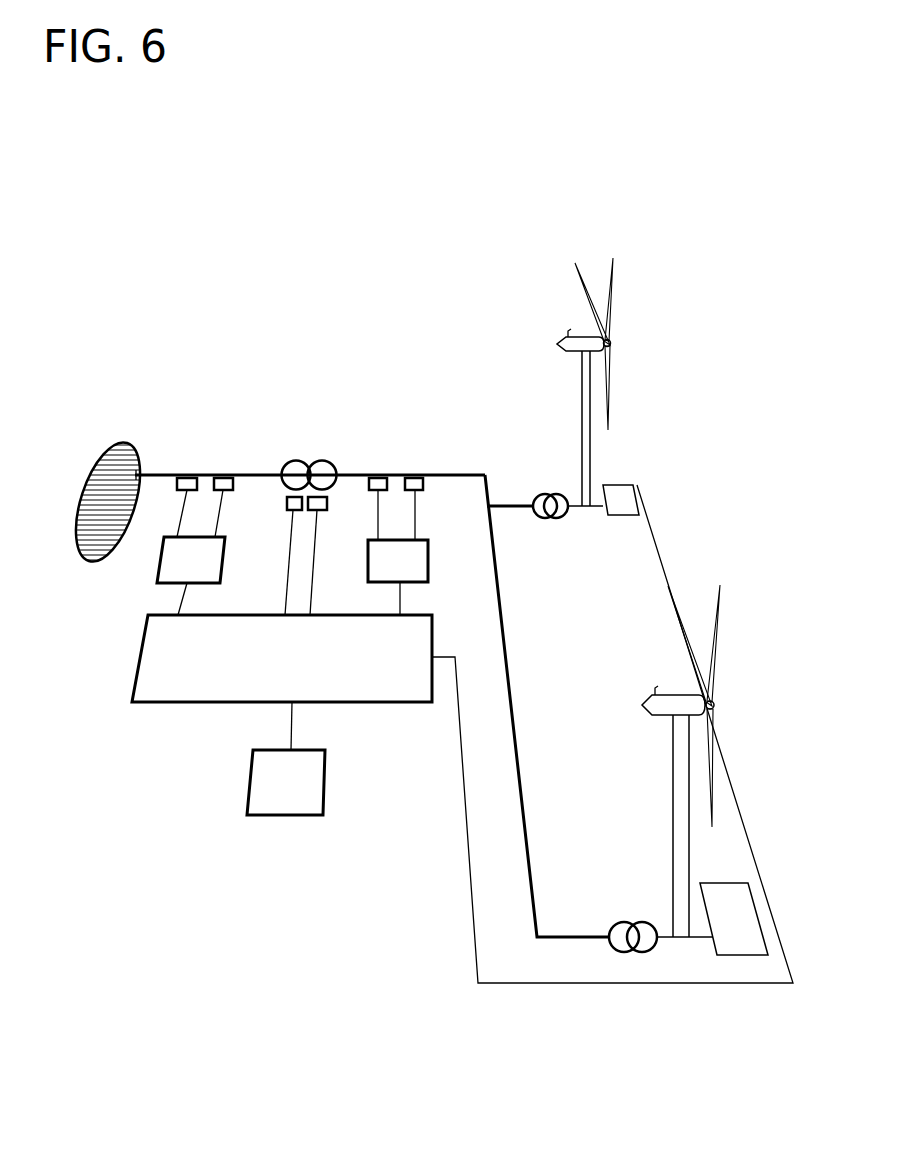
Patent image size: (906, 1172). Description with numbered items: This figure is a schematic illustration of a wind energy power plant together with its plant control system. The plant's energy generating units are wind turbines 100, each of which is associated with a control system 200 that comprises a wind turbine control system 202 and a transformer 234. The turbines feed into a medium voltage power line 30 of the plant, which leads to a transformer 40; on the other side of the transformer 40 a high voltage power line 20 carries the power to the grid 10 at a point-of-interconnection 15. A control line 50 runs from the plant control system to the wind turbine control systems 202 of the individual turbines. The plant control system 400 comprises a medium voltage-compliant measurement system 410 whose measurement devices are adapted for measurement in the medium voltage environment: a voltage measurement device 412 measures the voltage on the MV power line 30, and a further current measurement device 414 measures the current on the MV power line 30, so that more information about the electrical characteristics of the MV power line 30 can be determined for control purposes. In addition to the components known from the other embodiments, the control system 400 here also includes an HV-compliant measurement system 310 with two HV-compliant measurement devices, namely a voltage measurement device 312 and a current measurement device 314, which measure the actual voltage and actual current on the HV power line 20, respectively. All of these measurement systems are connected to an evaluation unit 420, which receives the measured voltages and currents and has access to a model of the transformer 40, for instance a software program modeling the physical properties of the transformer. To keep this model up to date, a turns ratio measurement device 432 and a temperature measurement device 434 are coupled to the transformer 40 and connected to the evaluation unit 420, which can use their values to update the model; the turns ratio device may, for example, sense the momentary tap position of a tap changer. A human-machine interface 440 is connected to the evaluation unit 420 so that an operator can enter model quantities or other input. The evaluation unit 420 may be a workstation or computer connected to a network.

The grid 10 is at (127, 441).
The point-of-interconnection 15 is at (141, 471).
The high voltage power line 20 is at (249, 470).
The medium voltage power line 30 is at (402, 472).
The transformer 40 is at (358, 440).
The control line 50 is at (466, 895).
The wind turbine 100 is at (563, 312).
The control system 200 is at (560, 460).
The wind turbine control system 202 is at (613, 486).
The transformer 234 is at (553, 517).
The HV-compliant measurement system 310 is at (160, 565).
The voltage measurement device 312 is at (182, 491).
The current measurement device 314 is at (232, 492).
The control system 400 is at (210, 829).
The medium voltage-compliant measurement system 410 is at (428, 557).
The voltage measurement device 412 is at (373, 492).
The current measurement device 414 is at (418, 493).
The evaluation unit 420 is at (132, 679).
The turns ratio measurement device 432 is at (292, 513).
The temperature measurement device 434 is at (323, 512).
The human-machine interface 440 is at (280, 817).